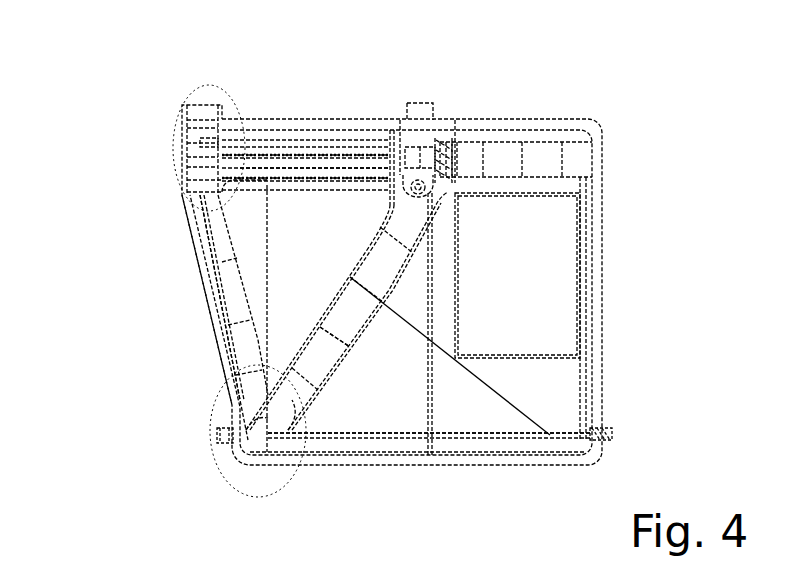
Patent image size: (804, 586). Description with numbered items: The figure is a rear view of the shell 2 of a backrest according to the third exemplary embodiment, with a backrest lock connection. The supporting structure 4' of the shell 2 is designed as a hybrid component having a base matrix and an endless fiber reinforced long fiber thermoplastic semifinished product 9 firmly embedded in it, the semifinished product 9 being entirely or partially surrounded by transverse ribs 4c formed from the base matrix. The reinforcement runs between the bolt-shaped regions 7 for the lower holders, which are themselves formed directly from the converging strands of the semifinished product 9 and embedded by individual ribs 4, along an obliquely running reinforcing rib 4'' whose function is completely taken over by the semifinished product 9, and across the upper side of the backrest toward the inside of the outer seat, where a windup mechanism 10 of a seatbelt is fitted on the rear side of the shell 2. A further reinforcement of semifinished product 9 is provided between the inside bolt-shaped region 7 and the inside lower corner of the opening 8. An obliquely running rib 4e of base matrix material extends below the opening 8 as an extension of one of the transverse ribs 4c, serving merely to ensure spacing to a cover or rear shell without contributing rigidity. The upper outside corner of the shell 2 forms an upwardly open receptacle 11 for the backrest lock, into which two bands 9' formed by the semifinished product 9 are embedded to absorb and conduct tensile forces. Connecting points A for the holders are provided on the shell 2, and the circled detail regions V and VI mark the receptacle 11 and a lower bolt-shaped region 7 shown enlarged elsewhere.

The shell 2 is at (200, 300).
The ribs 4 is at (184, 302).
The transverse ribs 4c is at (232, 262).
The supporting structure 4' is at (306, 100).
The obliquely running reinforcing rib 4'' is at (462, 304).
The obliquely running rib 4e is at (510, 402).
The bolt-shaped regions 7 is at (217, 440).
The opening 8 is at (533, 300).
The semifinished product 9 is at (375, 427).
The bands 9' is at (316, 108).
The windup mechanism 10 is at (423, 150).
The receptacle 11 is at (196, 124).
The connecting points A is at (160, 162).
The section view V indicator V is at (209, 129).
The section view VI indicator VI is at (246, 438).